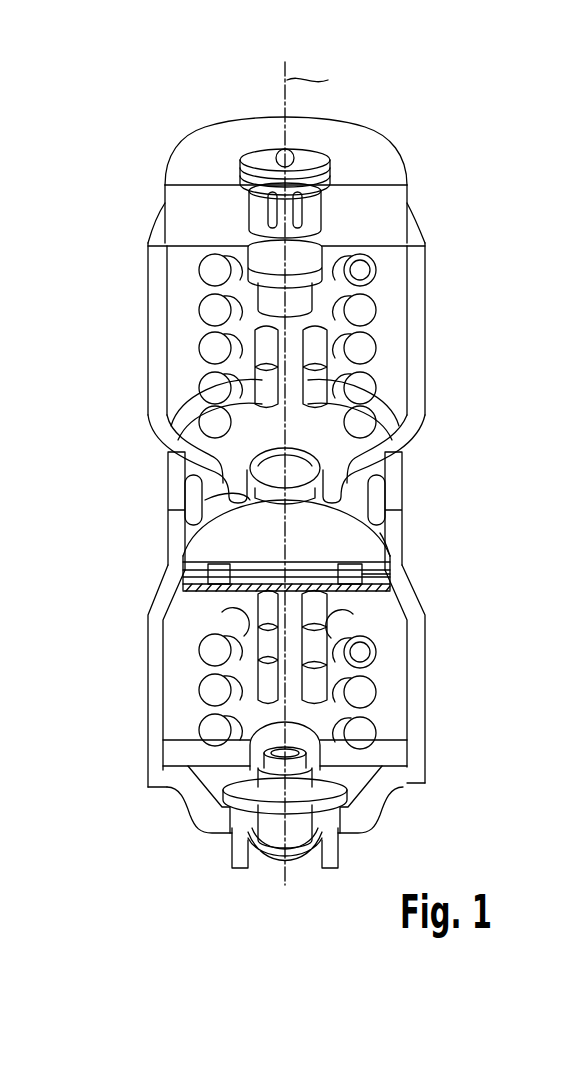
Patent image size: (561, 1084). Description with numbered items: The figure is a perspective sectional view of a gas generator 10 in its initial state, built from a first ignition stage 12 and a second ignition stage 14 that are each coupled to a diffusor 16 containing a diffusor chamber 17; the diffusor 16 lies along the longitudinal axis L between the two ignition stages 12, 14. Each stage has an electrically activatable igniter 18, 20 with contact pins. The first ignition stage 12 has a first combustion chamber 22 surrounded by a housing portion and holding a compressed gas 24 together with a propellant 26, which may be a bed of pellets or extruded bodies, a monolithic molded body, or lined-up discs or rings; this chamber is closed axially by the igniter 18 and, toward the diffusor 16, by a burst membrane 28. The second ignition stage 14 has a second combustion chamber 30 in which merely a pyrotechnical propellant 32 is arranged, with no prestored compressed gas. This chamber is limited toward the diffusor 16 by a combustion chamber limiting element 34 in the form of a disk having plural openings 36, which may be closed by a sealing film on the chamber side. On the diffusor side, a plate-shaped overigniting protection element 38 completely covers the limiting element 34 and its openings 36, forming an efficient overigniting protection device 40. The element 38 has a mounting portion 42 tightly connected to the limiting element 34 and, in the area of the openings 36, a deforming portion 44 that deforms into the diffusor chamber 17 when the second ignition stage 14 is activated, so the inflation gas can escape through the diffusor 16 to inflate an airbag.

The gas generator 10 is at (155, 130).
The first ignition stage 12 is at (150, 232).
The second ignition stage 14 is at (142, 686).
The diffusor 16 is at (148, 480).
The diffusor chamber 17 is at (222, 500).
The igniter 18 is at (315, 245).
The igniter 20 is at (277, 788).
The first combustion chamber 22 is at (385, 362).
The compressed gas 24 is at (385, 313).
The propellant 26 is at (360, 272).
The burst membrane 28 is at (305, 470).
The second combustion chamber 30 is at (385, 690).
The pyrotechnical propellant 32 is at (362, 653).
The combustion chamber limiting element 34 is at (372, 582).
The openings 36 is at (350, 572).
The overigniting protection element 38 is at (222, 528).
The overigniting protection device 40 is at (160, 565).
The mounting portion 42 is at (300, 577).
The deforming portion 44 is at (364, 566).